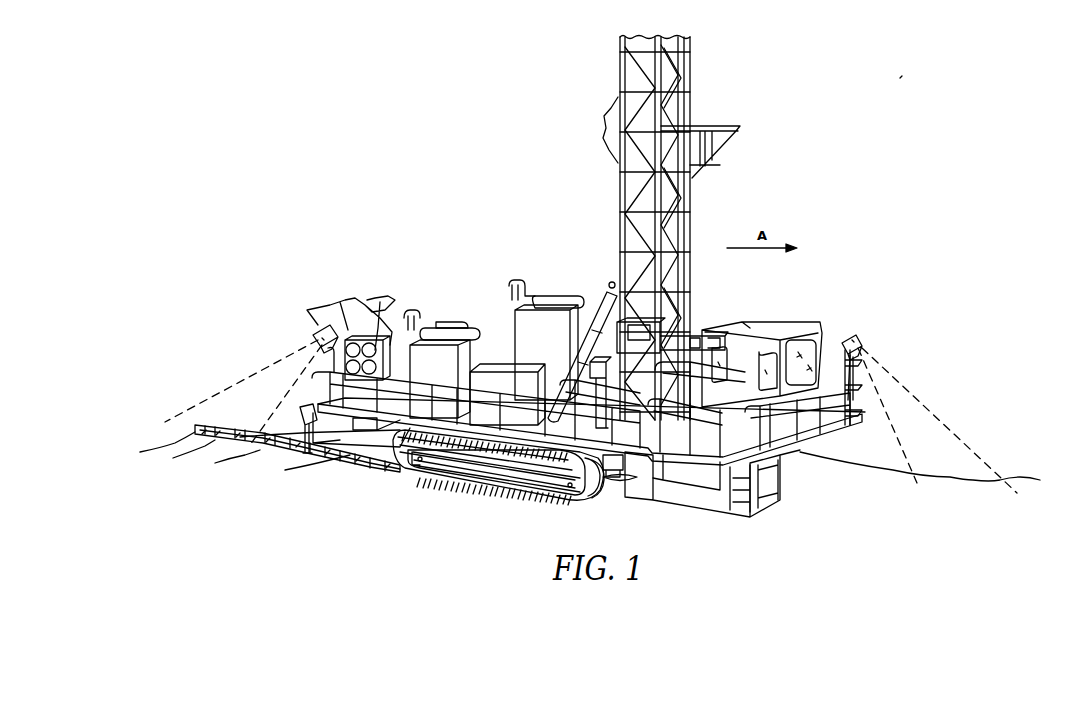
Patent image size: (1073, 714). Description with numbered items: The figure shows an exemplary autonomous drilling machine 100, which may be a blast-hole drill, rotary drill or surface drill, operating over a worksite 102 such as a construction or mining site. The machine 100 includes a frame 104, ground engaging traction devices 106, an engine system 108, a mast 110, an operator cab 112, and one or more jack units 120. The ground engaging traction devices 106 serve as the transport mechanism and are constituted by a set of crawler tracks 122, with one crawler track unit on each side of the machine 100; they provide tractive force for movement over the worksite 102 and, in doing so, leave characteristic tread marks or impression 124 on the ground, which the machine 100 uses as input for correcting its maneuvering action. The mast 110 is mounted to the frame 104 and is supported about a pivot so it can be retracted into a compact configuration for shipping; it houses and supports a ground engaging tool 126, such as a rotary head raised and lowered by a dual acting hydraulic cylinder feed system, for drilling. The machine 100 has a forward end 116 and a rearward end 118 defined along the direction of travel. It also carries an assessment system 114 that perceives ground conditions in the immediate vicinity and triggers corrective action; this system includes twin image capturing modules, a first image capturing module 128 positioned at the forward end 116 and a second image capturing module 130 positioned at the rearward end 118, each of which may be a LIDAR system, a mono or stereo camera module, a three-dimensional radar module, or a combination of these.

The machine 100 is at (898, 80).
The worksite 102 is at (974, 480).
The frame 104 is at (843, 430).
The ground engaging traction devices 106 is at (604, 490).
The engine system 108 is at (484, 314).
The mast 110 is at (690, 108).
The operator cab 112 is at (759, 332).
The assessment system 114 is at (309, 334).
The forward end 116 is at (810, 459).
The rearward end 118 is at (270, 352).
The jack units 120 is at (645, 488).
The crawler tracks 122 is at (456, 472).
The tread marks or impression 124 is at (238, 437).
The ground engaging tool 126 is at (673, 213).
The first image capturing module 128 is at (855, 339).
The second image capturing module 130 is at (316, 336).